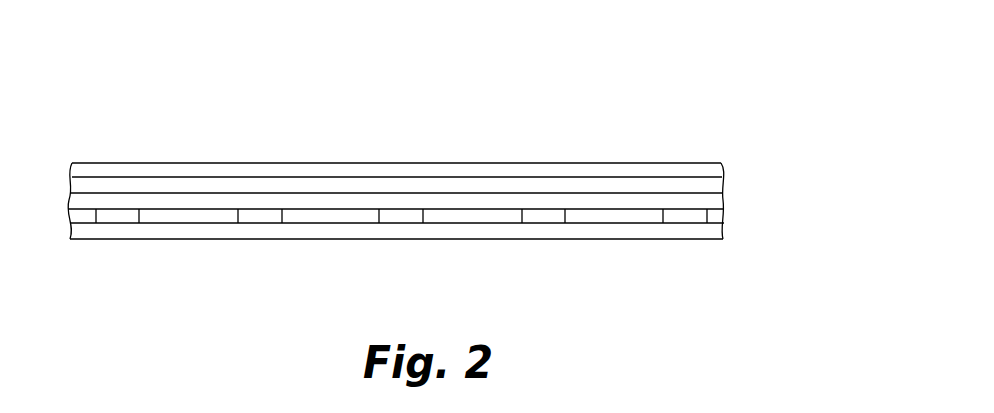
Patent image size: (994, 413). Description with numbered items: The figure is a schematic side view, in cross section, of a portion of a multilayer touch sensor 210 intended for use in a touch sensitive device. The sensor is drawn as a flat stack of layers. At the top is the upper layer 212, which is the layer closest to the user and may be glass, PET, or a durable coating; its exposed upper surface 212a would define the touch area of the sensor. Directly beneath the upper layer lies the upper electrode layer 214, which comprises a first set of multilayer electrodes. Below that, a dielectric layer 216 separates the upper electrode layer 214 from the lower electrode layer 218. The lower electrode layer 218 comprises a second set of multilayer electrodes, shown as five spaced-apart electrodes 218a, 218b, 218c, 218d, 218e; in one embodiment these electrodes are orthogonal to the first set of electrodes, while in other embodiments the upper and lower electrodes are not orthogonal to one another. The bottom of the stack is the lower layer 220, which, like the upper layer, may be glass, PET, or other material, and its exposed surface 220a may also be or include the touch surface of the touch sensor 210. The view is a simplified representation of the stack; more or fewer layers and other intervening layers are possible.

The multilayer touch sensor 210 is at (740, 92).
The upper layer 212 is at (675, 168).
The upper surface of upper layer 212a is at (538, 160).
The upper electrode layer 214 is at (718, 183).
The dielectric layer 216 is at (716, 201).
The lower electrode layer 218 is at (720, 216).
The multilayer electrode 218a is at (122, 216).
The multilayer electrode 218b is at (261, 216).
The multilayer electrode 218c is at (400, 216).
The multilayer electrode 218d is at (542, 216).
The multilayer electrode 218e is at (688, 216).
The lower layer 220 is at (720, 228).
The exposed surface of lower layer 220a is at (187, 242).